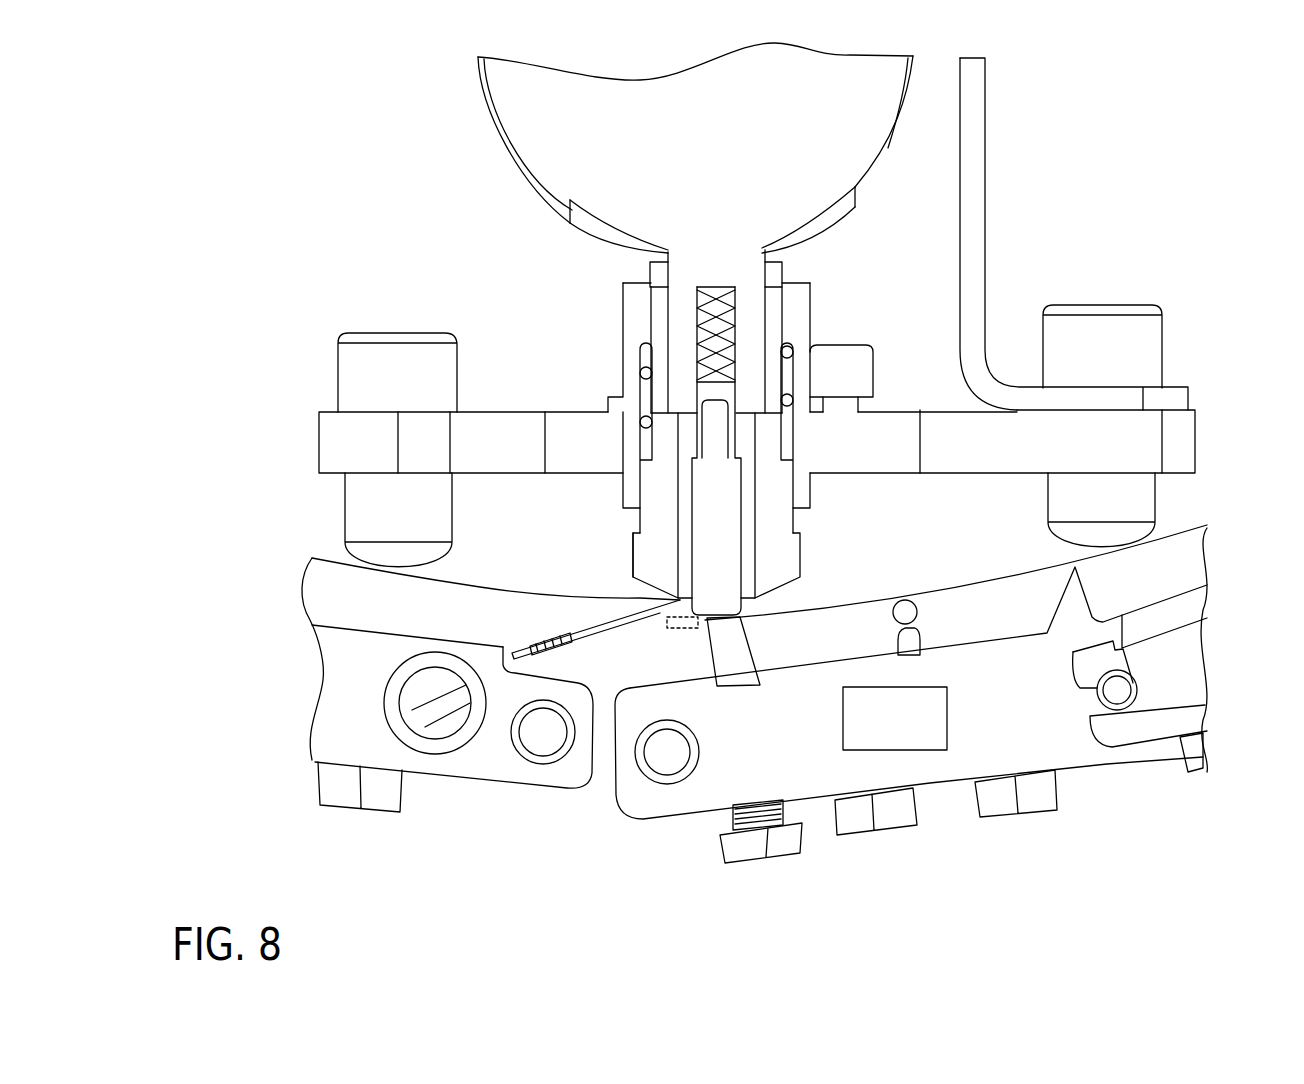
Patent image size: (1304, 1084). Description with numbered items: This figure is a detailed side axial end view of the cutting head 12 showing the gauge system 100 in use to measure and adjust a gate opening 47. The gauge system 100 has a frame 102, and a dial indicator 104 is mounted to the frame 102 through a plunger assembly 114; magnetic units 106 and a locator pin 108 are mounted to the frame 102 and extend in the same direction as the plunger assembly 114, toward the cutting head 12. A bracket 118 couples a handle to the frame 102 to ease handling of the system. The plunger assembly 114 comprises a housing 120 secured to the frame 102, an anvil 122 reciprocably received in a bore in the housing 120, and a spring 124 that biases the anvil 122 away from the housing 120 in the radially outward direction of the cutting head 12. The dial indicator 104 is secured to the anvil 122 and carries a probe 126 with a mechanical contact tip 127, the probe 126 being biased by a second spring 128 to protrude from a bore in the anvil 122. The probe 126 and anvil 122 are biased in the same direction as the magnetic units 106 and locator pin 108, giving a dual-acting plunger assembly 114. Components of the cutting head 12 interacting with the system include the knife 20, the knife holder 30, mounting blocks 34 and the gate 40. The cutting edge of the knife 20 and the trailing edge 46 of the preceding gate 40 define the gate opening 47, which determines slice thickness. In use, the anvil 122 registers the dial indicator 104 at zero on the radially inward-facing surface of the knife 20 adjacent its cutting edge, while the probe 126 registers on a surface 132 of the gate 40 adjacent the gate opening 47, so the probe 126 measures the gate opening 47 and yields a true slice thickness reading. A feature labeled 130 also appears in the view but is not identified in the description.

The cutting head 12 is at (462, 830).
The knife 20 is at (602, 628).
The knife holder 30 is at (372, 614).
The mounting block 34 is at (337, 722).
The gate 40 is at (967, 627).
The trailing edge 46 is at (707, 660).
The gate opening 47 is at (673, 647).
The gauge system 100 is at (424, 294).
The frame 102 is at (1185, 440).
The dial indicator 104 is at (511, 180).
The magnetic unit 106 is at (329, 522).
The locator pin 108 is at (672, 612).
The plunger assembly 114 is at (596, 340).
The bracket 118 is at (975, 212).
The housing 120 is at (611, 316).
The anvil 122 is at (619, 542).
The spring 124 is at (625, 372).
The probe 126 is at (722, 548).
The mechanical contact tip 127 is at (742, 628).
The second spring 128 is at (713, 300).
The gap 130 is at (512, 587).
The surface 132 is at (950, 584).